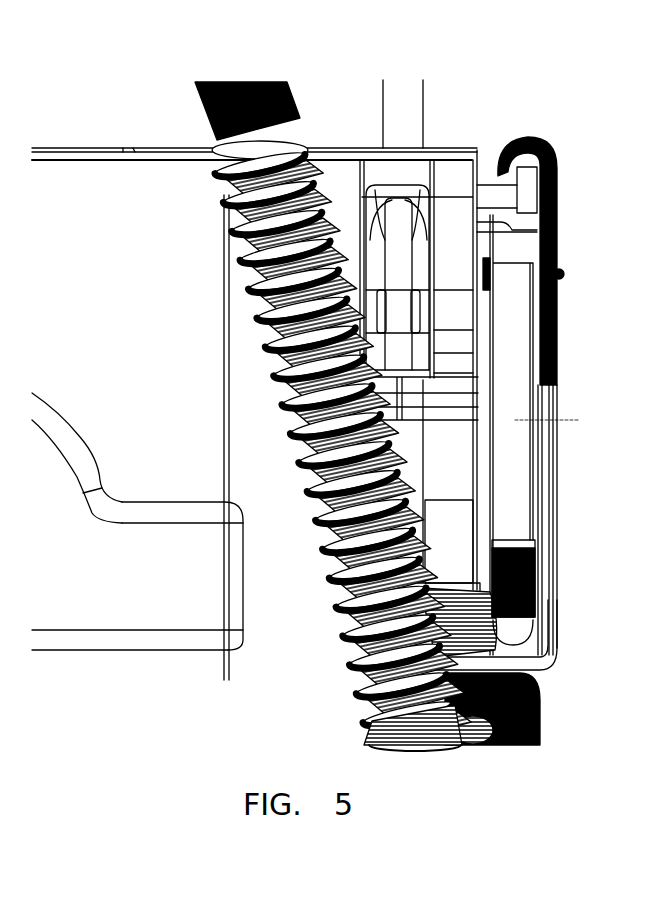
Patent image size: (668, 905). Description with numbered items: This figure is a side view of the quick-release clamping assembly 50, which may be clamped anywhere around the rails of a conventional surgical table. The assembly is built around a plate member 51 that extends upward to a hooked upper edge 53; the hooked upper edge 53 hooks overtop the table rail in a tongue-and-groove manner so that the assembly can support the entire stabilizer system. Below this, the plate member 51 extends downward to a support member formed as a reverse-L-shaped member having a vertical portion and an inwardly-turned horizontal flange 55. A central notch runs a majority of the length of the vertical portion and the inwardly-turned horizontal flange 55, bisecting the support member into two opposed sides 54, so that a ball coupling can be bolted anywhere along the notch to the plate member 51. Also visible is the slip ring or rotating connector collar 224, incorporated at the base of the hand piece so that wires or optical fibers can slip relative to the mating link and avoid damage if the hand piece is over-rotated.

The rotating connector collar 224 is at (297, 108).
The quick-release clamping assembly 50 is at (572, 492).
The plate member 51 is at (562, 333).
The hooked upper edge 53 is at (531, 135).
The opposed sides 54 is at (558, 572).
The inwardly-turned horizontal flange 55 is at (533, 700).